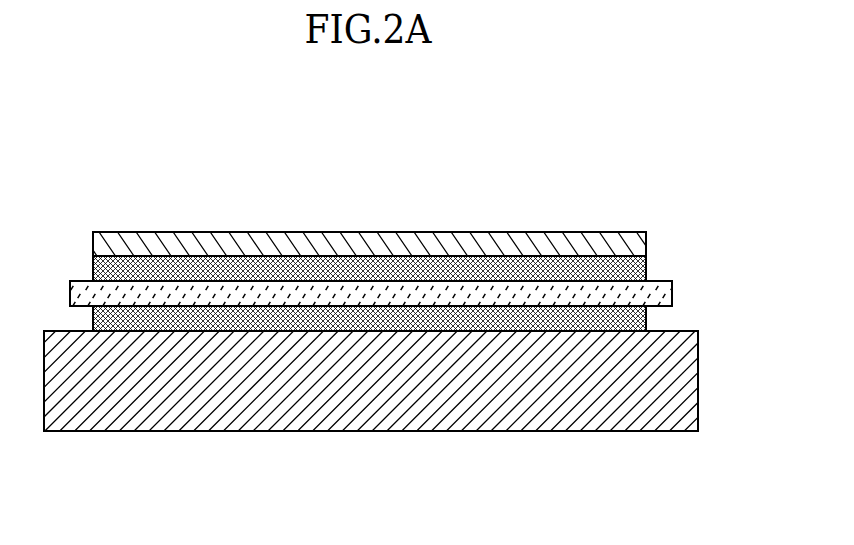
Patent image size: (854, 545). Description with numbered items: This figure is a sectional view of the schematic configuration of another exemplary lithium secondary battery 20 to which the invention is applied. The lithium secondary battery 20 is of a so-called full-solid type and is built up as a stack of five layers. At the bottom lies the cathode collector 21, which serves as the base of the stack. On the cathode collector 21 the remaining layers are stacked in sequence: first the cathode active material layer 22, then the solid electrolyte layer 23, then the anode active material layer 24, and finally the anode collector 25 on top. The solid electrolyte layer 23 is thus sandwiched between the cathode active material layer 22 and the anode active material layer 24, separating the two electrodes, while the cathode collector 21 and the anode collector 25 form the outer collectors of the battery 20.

The lithium secondary battery 20 is at (758, 142).
The cathode collector 21 is at (693, 378).
The cathode active material layer 22 is at (644, 315).
The solid electrolyte layer 23 is at (666, 295).
The anode active material layer 24 is at (645, 266).
The anode collector 25 is at (645, 240).